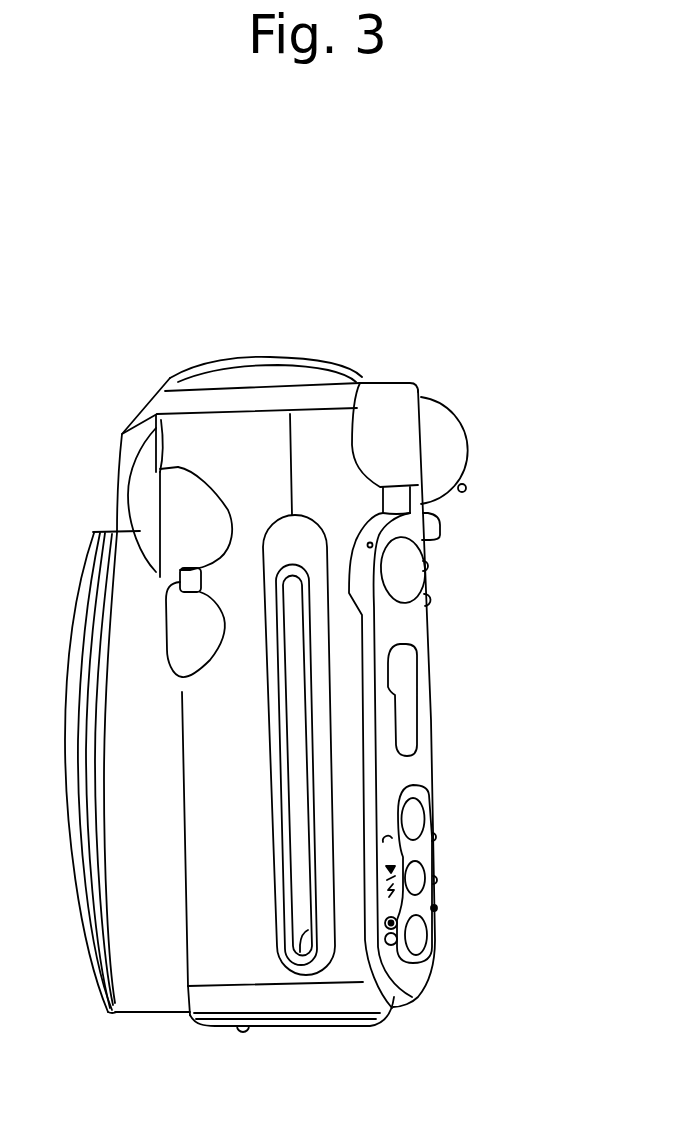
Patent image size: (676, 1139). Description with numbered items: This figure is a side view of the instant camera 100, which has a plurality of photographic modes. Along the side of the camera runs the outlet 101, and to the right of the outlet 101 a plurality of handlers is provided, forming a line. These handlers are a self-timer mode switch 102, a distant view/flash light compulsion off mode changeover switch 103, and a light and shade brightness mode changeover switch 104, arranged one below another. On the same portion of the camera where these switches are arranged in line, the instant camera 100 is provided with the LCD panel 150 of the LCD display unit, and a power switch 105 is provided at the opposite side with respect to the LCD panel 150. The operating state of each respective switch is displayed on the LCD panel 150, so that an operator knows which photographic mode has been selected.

The instant camera 100 is at (303, 298).
The outlet 101 is at (305, 932).
The self-timer mode switch 102 is at (413, 820).
The distant view/flash light compulsion off mode changeover switch 103 is at (414, 877).
The light and shade brightness mode changeover switch 104 is at (416, 935).
The power switch 105 is at (400, 583).
The LCD panel 150 is at (418, 698).